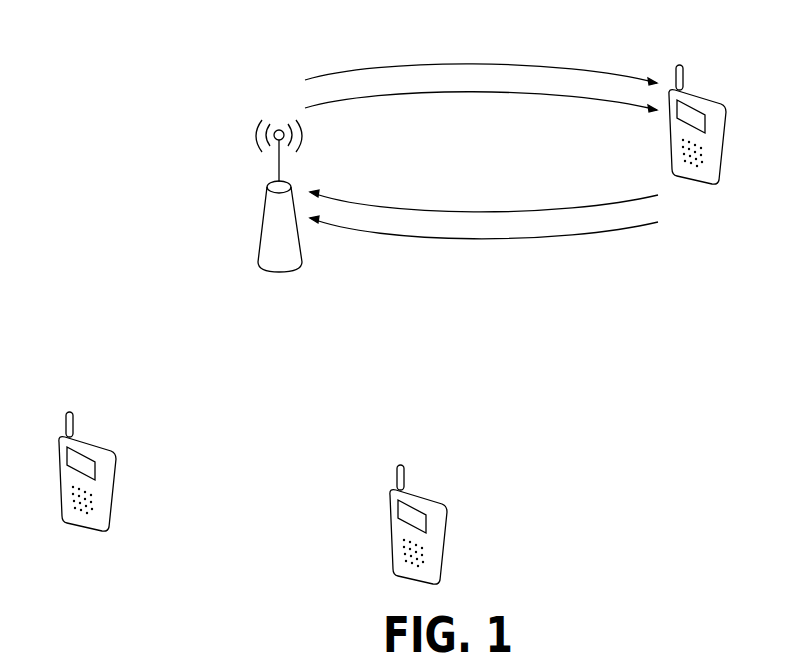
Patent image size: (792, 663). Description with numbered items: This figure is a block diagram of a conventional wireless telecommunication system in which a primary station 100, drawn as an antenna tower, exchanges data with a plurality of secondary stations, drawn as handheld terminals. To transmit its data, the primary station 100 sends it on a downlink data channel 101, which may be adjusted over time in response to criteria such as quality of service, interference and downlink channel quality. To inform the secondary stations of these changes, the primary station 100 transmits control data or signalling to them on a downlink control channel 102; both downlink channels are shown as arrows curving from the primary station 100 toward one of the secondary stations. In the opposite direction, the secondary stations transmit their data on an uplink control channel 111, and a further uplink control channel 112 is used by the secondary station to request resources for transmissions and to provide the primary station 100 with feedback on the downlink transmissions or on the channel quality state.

The primary station 100 is at (257, 196).
The downlink data channel 101 is at (481, 87).
The downlink control channel 102 is at (481, 58).
The uplink control channel 111 is at (484, 197).
The uplink control channel 112 is at (484, 229).